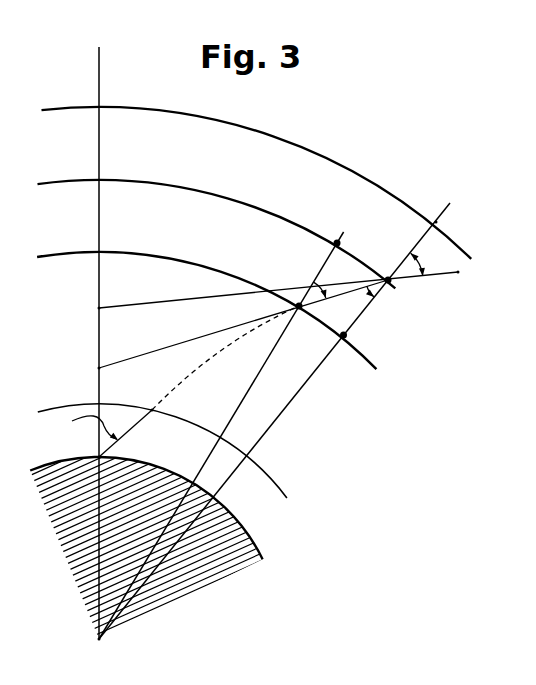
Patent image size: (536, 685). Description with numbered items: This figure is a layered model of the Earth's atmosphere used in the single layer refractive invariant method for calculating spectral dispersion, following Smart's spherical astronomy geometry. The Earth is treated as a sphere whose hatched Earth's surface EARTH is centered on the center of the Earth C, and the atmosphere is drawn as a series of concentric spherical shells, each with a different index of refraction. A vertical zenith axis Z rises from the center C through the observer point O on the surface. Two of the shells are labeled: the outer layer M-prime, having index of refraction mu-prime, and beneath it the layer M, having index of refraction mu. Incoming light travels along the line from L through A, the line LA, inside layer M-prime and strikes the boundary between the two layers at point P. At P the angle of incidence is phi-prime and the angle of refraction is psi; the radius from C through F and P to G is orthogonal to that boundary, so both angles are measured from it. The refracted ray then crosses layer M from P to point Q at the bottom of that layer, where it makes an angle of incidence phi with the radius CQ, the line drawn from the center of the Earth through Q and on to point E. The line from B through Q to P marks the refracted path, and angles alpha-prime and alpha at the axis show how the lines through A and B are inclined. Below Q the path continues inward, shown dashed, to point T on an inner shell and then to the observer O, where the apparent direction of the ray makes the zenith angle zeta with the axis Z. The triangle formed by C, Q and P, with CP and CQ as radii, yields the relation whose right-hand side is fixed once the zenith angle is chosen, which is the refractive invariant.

The zenith axis Z is at (88, 339).
The center of the Earth C is at (90, 649).
The observer point O is at (108, 471).
The point T is at (151, 426).
The point A is at (87, 311).
The point B is at (88, 371).
The point E is at (325, 247).
The point Q is at (301, 320).
The point F is at (338, 348).
The point P is at (391, 295).
The point G is at (436, 206).
The line L is at (465, 277).
The layer M is at (134, 231).
The layer M' M-prime is at (137, 155).
The index of refraction μ mu is at (216, 239).
The index of refraction μ' mu-prime is at (226, 168).
The angle α alpha is at (110, 354).
The angle α' alpha-prime is at (113, 299).
The angle of incidence φ phi is at (321, 288).
The angle of incidence φ' phi-prime is at (417, 264).
The angle of refraction ψ psi is at (374, 297).
The zenith angle ζ zeta is at (85, 426).
The Earth's surface EARTH is at (242, 527).